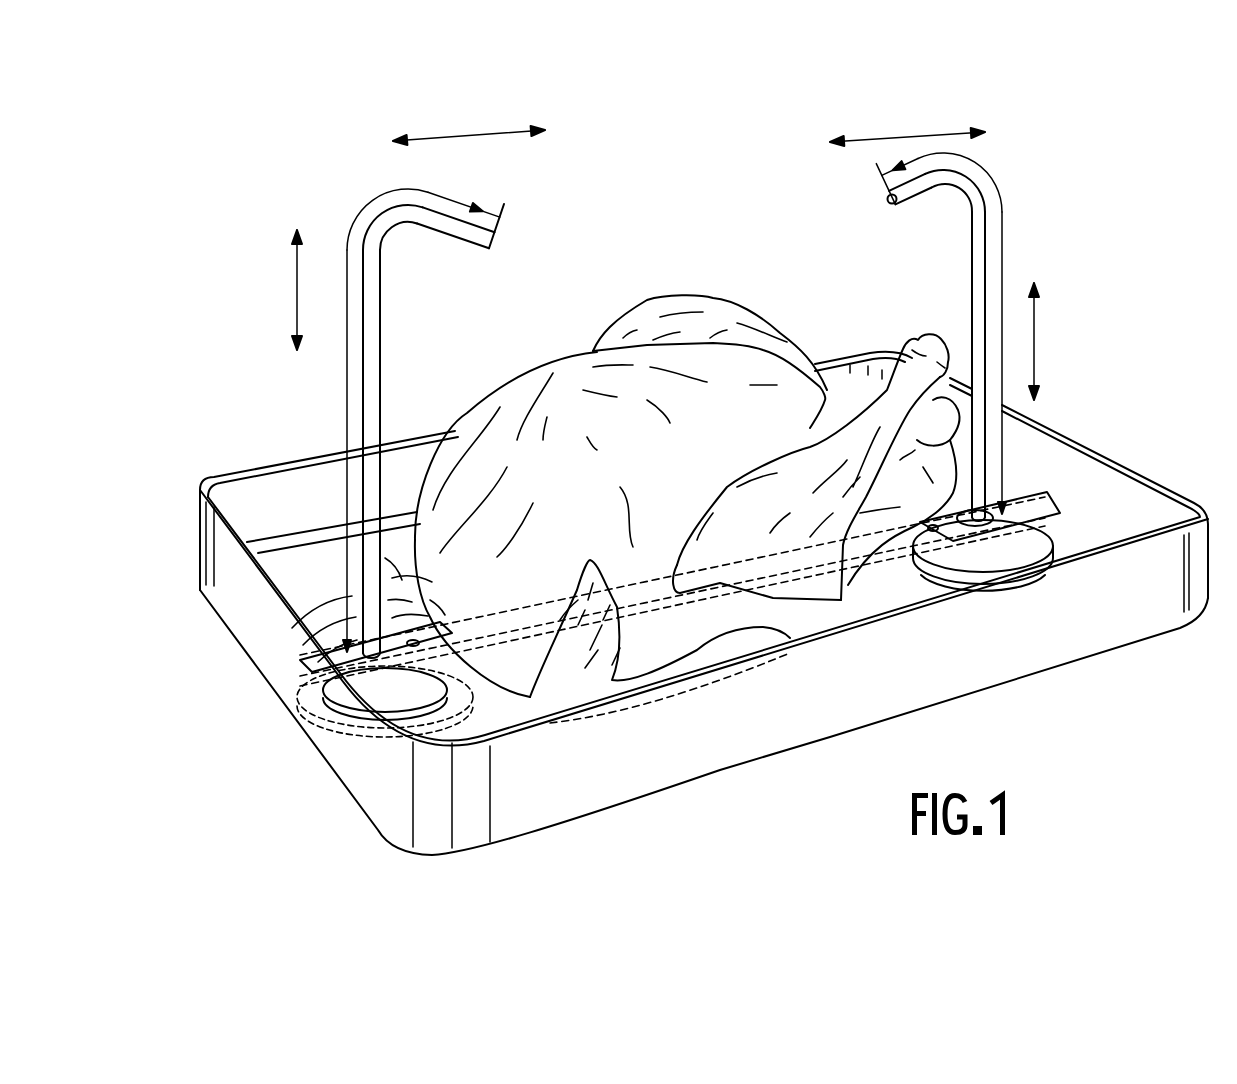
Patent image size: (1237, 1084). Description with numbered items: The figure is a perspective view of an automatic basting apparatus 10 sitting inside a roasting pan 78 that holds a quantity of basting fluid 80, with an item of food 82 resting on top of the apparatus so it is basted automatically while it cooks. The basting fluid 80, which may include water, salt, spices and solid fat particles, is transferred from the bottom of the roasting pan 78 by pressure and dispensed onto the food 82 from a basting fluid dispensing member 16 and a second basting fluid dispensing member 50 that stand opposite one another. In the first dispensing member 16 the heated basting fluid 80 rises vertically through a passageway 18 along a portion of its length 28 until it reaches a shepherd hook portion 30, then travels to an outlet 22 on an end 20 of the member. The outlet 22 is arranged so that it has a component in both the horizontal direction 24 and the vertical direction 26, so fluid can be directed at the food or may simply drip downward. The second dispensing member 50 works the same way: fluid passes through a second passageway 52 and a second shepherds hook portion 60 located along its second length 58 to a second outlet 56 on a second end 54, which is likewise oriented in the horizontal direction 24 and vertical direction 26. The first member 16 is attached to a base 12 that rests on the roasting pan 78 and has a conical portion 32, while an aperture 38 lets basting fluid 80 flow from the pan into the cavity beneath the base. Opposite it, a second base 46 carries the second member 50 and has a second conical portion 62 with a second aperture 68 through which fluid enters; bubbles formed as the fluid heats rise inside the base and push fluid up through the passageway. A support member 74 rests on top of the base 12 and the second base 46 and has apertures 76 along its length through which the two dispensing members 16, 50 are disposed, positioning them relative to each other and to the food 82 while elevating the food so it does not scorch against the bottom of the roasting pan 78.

The automatic basting apparatus 10 is at (588, 191).
The base 12 is at (445, 670).
The basting fluid dispensing member 16 is at (381, 402).
The passageway 18 is at (378, 330).
The end 20 is at (470, 242).
The outlet 22 is at (495, 241).
The horizontal direction 24 is at (470, 132).
The vertical direction 26 is at (296, 287).
The length 28 is at (347, 380).
The shepherd hook portion 30 is at (398, 215).
The conical portion 32 is at (372, 688).
The aperture 38 is at (407, 700).
The second base 46 is at (1060, 543).
The second basting fluid dispensing member 50 is at (970, 290).
The second passageway 52 is at (985, 258).
The second end 54 is at (907, 207).
The second outlet 56 is at (890, 210).
The second length 58 is at (1003, 238).
The second shepherds hook portion 60 is at (967, 182).
The second conical portion 62 is at (1023, 537).
The second aperture 68 is at (1012, 555).
The support member 74 is at (920, 542).
The apertures 76 is at (1013, 511).
The roasting pan 78 is at (258, 618).
The basting fluid 80 is at (293, 572).
The food 82 is at (695, 357).